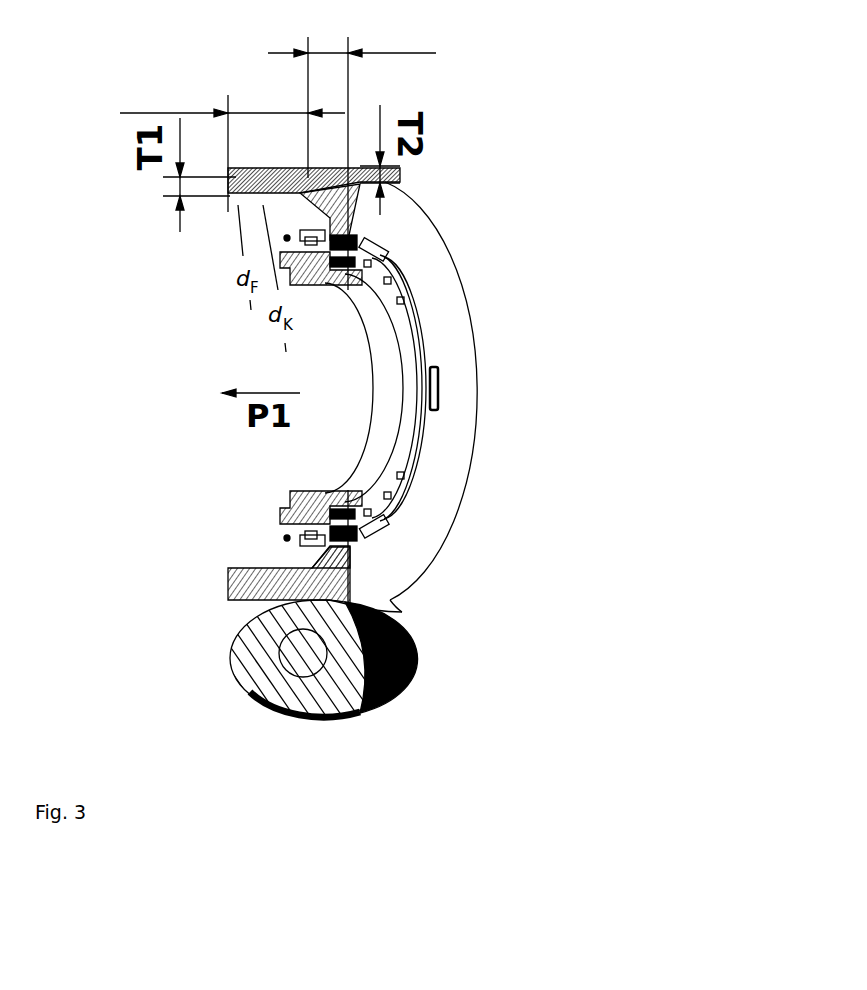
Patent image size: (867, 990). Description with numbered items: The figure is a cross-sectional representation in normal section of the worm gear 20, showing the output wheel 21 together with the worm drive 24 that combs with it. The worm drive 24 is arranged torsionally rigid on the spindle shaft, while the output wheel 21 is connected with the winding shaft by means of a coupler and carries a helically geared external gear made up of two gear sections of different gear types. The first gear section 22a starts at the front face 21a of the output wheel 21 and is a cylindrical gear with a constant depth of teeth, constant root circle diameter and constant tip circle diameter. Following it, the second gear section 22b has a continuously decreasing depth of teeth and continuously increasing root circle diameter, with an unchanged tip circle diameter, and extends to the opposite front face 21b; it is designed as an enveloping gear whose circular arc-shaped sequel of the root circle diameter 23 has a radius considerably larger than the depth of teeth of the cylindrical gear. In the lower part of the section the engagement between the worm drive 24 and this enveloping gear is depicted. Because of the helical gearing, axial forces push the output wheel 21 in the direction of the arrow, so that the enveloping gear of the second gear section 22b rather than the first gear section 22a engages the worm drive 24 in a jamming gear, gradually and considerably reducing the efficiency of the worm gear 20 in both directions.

The worm gear 20 is at (332, 367).
The output wheel 21 is at (492, 397).
The front face of the output wheel 21a is at (232, 218).
The opposite front face of the output wheel 21b is at (453, 344).
The first gear section 22a is at (260, 354).
The second gear section 22b is at (414, 297).
The circular arc-shaped sequel of the root circle diameter 23 is at (407, 556).
The worm drive 24 is at (322, 665).